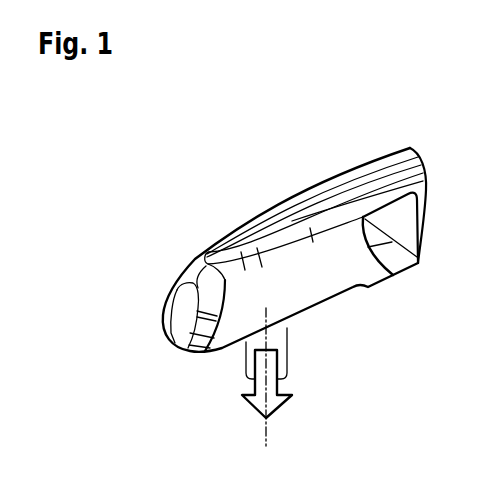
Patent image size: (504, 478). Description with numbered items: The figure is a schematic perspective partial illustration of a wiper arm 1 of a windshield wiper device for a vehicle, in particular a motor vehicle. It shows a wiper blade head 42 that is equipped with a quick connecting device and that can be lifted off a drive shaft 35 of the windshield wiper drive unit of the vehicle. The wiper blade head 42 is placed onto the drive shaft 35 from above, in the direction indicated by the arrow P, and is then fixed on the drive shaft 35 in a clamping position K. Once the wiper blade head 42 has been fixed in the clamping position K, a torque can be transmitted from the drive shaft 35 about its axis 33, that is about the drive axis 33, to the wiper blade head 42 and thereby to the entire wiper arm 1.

The wiper arm 1 is at (412, 129).
The wiper blade head 42 is at (252, 237).
The drive shaft 35 is at (285, 335).
The axis 33 is at (265, 441).
The arrow P is at (283, 406).
The clamping position K is at (221, 362).